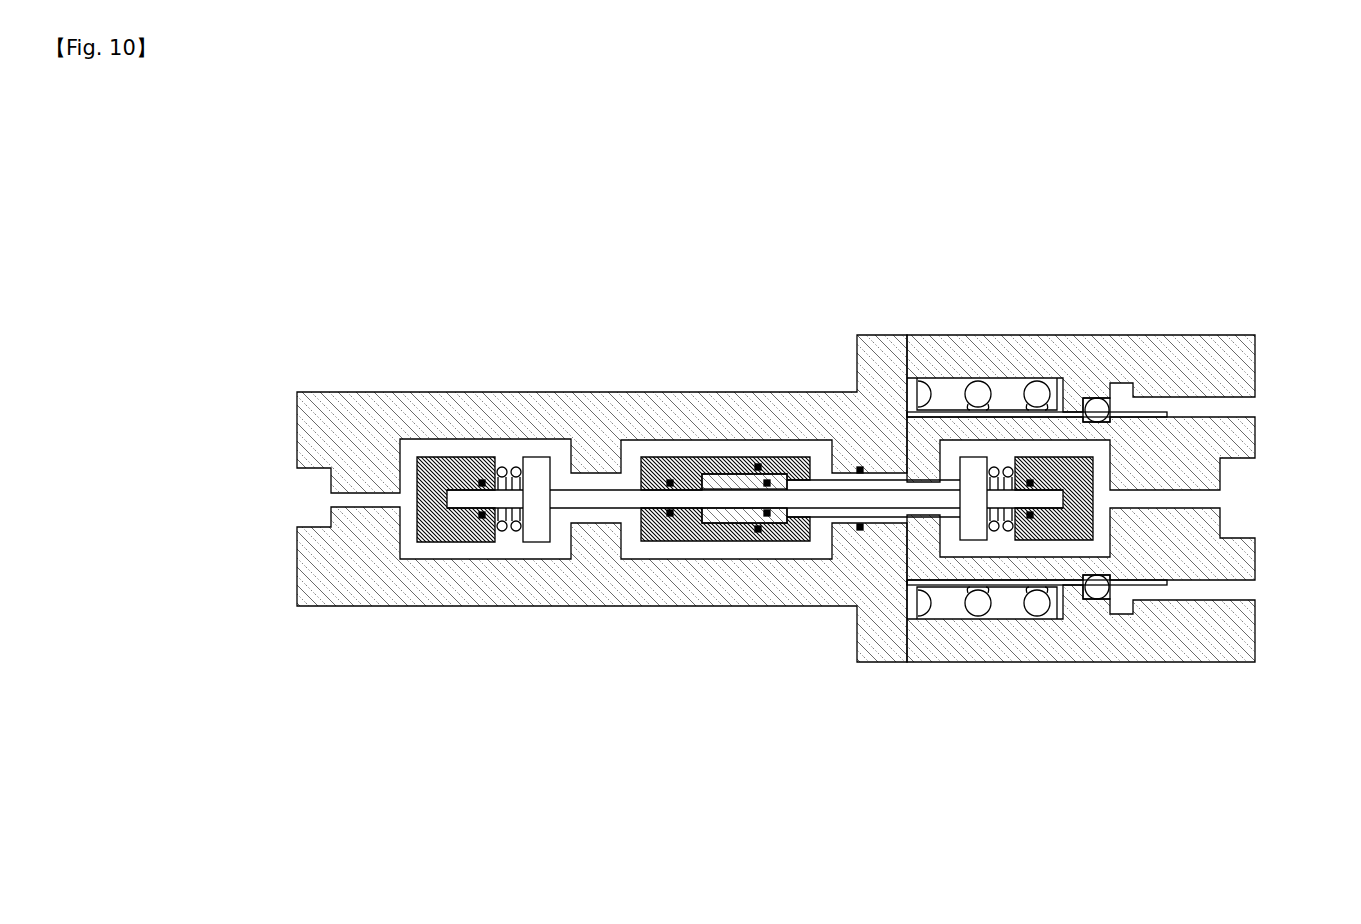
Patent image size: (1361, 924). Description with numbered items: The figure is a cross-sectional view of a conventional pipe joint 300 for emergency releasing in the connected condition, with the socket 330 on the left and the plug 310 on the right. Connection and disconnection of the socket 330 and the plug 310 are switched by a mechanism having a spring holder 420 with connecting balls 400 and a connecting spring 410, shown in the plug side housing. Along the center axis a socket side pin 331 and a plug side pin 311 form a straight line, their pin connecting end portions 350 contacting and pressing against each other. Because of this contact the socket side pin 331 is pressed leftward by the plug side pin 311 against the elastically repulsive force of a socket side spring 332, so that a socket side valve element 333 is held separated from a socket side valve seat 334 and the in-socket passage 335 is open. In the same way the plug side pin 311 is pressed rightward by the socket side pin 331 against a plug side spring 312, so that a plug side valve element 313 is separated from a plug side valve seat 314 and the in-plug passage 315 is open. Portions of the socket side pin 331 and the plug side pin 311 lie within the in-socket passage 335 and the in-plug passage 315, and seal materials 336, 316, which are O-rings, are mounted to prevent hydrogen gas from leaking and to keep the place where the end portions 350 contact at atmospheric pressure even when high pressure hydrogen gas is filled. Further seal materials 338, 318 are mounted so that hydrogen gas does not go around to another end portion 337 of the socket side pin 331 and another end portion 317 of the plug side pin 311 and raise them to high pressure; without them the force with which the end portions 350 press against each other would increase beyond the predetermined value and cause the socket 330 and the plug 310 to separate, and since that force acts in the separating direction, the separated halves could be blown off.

The pipe joint for emergency releasing 300 is at (834, 258).
The plug 310 is at (1256, 433).
The plug side pin 311 is at (878, 498).
The plug side spring 312 is at (1002, 532).
The plug side valve element 313 is at (977, 455).
The plug side valve seat 314 is at (940, 537).
The in-plug passage 315 is at (1040, 550).
The seal material 316 is at (767, 513).
The another end portion of the plug side pin 317 is at (1093, 503).
The seal material 318 is at (1030, 483).
The socket 330 is at (363, 385).
The socket side pin 331 is at (600, 497).
The socket side spring 332 is at (513, 523).
The socket side valve element 333 is at (538, 454).
The socket side valve seat 334 is at (571, 456).
The in-socket passage 335 is at (547, 553).
The seal material 336 is at (670, 513).
The another end portion of the socket side pin 337 is at (447, 503).
The seal material 338 is at (483, 480).
The pin connecting end portions 350 is at (740, 480).
The connecting balls 400 is at (1097, 410).
The connecting spring 410 is at (978, 394).
The spring holder 420 is at (1147, 397).